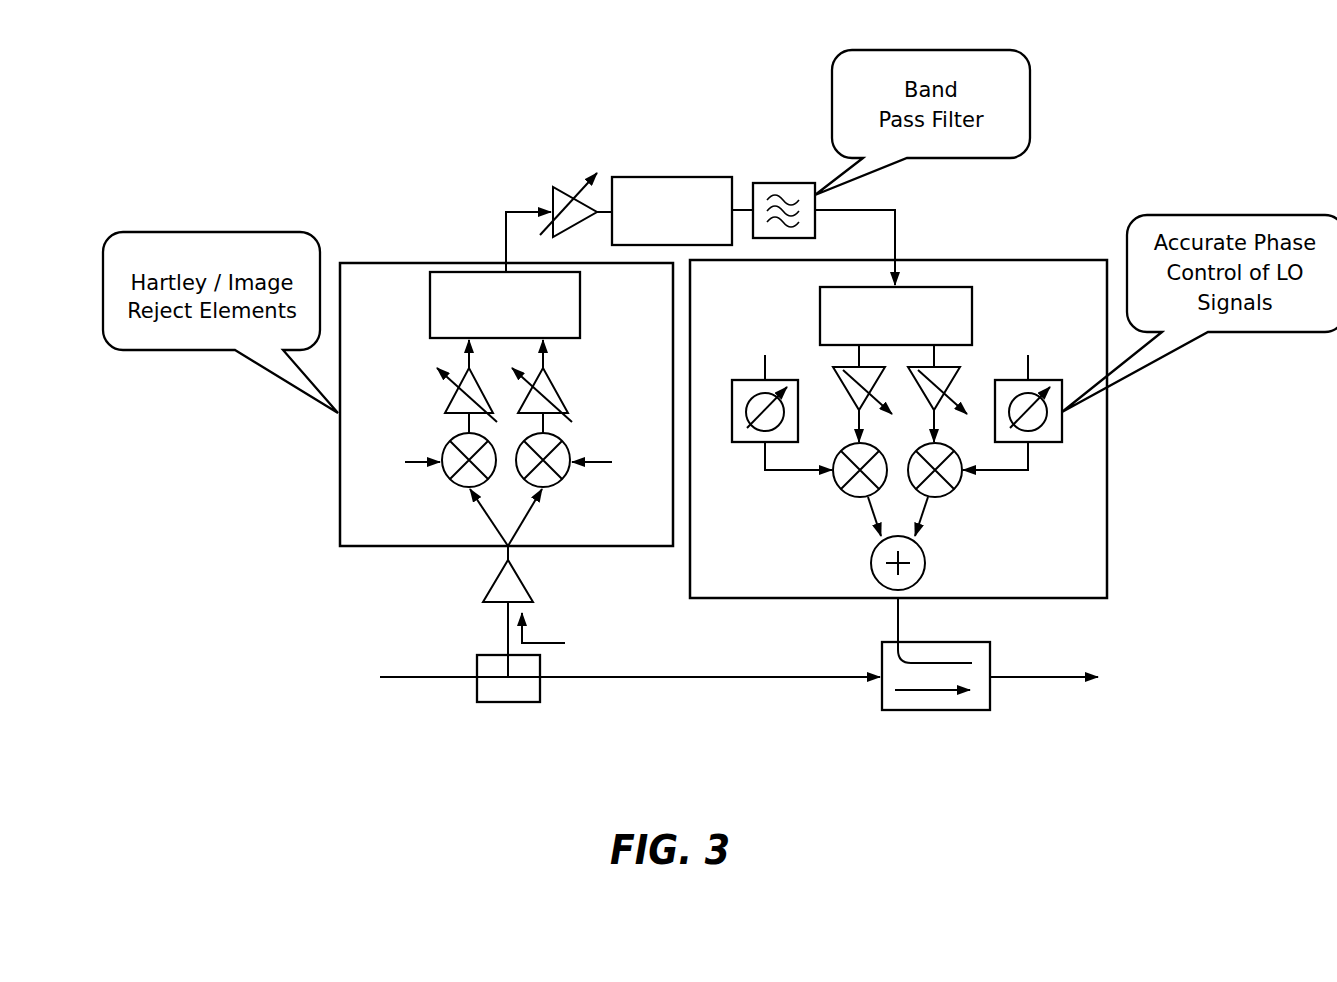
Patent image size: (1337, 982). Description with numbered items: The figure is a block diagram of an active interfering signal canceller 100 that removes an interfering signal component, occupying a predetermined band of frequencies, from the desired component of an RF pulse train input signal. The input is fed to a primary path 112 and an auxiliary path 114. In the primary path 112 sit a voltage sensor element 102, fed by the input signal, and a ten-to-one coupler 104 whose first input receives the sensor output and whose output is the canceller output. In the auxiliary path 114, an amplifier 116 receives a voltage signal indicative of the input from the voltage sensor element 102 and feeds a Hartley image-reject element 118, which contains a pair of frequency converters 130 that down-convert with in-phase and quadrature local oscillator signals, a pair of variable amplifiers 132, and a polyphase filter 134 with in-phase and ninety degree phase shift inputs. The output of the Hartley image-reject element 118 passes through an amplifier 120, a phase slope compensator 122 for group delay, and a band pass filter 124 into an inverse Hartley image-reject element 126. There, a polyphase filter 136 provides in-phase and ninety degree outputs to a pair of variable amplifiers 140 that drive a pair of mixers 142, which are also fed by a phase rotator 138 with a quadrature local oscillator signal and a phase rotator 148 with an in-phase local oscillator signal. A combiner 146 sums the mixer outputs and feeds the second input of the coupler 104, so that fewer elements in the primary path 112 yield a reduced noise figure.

The active interfering signal canceller 100 is at (346, 174).
The voltage sensor element 102 is at (483, 655).
The coupler 104 is at (990, 695).
The primary path 112 is at (703, 675).
The auxiliary path 114 is at (671, 183).
The amplifier 116 is at (520, 583).
The Hartley image-reject element 118 is at (645, 304).
The amplifier 120 is at (555, 187).
The phase slope compensator 122 is at (698, 177).
The band pass filter 124 is at (775, 183).
The inverse Hartley image-reject element 126 is at (1080, 302).
The frequency converters 130 is at (458, 488).
The variable amplifiers 132 is at (447, 408).
The polyphase filter 134 is at (430, 328).
The polyphase filter 136 is at (820, 300).
The phase rotator 138 is at (742, 442).
The variable amplifiers 140 is at (836, 372).
The mixers 142 is at (842, 487).
The combiner 146 is at (925, 563).
The phase rotator 148 is at (1050, 442).